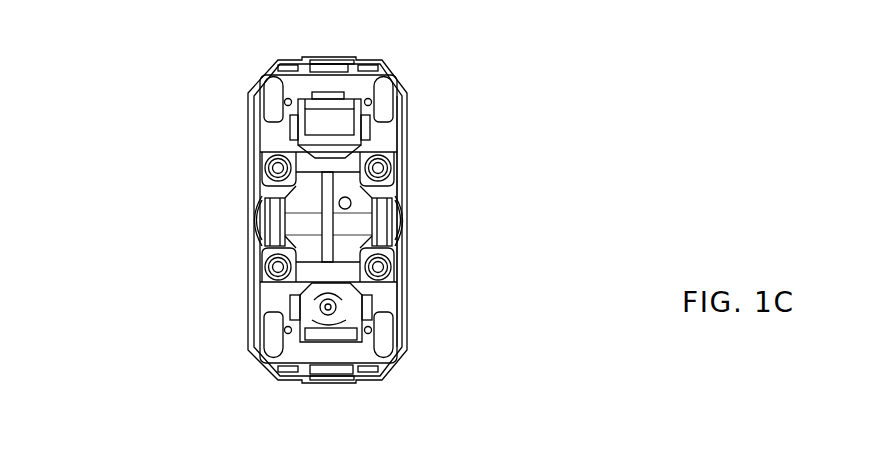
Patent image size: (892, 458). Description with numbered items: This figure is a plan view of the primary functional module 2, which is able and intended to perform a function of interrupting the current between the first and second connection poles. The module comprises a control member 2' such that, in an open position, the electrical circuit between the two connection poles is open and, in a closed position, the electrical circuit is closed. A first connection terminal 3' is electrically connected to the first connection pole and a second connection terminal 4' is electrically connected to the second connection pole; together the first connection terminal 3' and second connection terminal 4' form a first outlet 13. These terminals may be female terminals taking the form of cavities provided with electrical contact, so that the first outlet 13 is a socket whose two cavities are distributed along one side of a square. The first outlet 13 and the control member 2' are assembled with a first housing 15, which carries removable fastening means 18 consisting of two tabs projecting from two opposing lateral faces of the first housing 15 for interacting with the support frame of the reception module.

The primary functional module 2 is at (255, 220).
The control member 2' is at (479, 224).
The first connection terminal 3' is at (458, 155).
The second connection terminal 4' is at (413, 289).
The first outlet 13 is at (385, 258).
The first housing 15 is at (405, 112).
The removable fastening means 18 is at (334, 57).